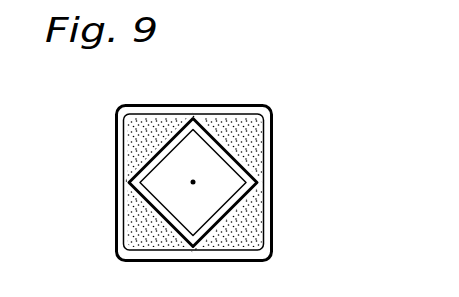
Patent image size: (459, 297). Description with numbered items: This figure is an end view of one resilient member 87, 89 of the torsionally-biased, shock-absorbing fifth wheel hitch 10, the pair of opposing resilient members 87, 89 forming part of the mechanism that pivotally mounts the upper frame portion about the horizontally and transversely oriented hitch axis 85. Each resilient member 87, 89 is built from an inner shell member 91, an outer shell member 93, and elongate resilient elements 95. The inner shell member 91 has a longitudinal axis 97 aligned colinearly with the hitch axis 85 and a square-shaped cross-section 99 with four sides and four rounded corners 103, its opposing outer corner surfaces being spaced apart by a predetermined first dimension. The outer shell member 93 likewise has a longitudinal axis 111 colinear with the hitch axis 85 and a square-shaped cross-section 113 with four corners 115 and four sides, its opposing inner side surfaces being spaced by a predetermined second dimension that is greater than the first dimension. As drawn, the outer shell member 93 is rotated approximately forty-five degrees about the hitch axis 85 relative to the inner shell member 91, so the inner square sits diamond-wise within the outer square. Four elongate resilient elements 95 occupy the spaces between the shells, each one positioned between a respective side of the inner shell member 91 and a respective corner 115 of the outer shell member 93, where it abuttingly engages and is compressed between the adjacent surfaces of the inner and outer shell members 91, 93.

The assembly 10 is at (320, 66).
The hitch axis 85 is at (193, 182).
The resilient member 87 is at (315, 122).
The resilient member 89 is at (170, 166).
The inner shell member 91 is at (193, 118).
The outer shell member 93 is at (272, 237).
The elongate resilient element 95 is at (131, 212).
The longitudinal axis 97 is at (193, 183).
The square-shaped cross-section 99 is at (106, 224).
The rounded corner 103 is at (206, 242).
The longitudinal axis 111 is at (193, 183).
The square-shaped cross-section 113 is at (334, 244).
The corner 115 is at (120, 112).